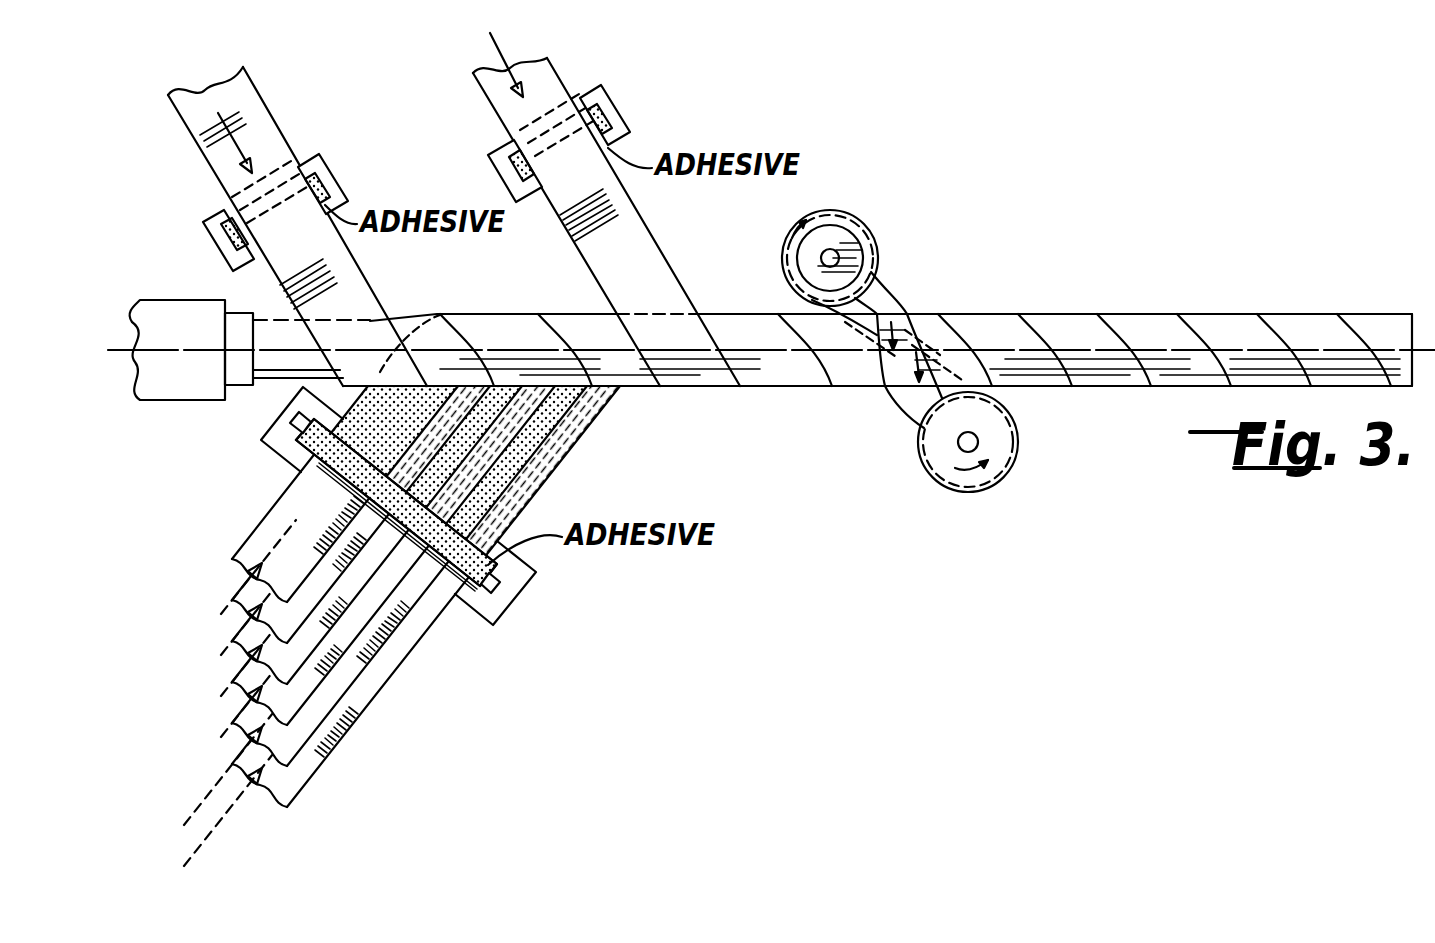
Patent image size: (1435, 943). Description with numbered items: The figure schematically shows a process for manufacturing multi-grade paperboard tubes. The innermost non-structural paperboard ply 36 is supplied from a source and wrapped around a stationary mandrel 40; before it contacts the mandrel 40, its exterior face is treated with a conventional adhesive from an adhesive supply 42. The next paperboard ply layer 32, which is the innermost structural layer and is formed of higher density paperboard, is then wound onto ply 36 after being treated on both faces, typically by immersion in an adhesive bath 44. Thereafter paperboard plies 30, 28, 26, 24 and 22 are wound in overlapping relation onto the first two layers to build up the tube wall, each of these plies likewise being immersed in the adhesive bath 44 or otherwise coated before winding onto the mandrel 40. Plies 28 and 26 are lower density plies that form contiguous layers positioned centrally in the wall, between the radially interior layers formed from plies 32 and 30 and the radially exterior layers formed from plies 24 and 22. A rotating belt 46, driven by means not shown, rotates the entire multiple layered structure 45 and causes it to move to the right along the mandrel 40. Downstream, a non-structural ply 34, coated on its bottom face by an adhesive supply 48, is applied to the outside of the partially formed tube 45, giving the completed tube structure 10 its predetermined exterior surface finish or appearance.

The tube structure 10 is at (1135, 288).
The paperboard ply 22 is at (290, 778).
The paperboard ply 24 is at (312, 720).
The paperboard ply 26 is at (230, 672).
The paperboard ply 28 is at (240, 635).
The paperboard ply 30 is at (240, 591).
The paperboard ply layer 32 is at (247, 550).
The non-structural ply 34 is at (549, 76).
The non-structural paperboard ply 36 is at (234, 88).
The mandrel 40 is at (262, 375).
The adhesive supply 42 is at (320, 165).
The adhesive bath 44 is at (492, 620).
The multiple layered structure 45 is at (512, 325).
The rotating belt 46 is at (910, 320).
The adhesive supply 48 is at (607, 106).